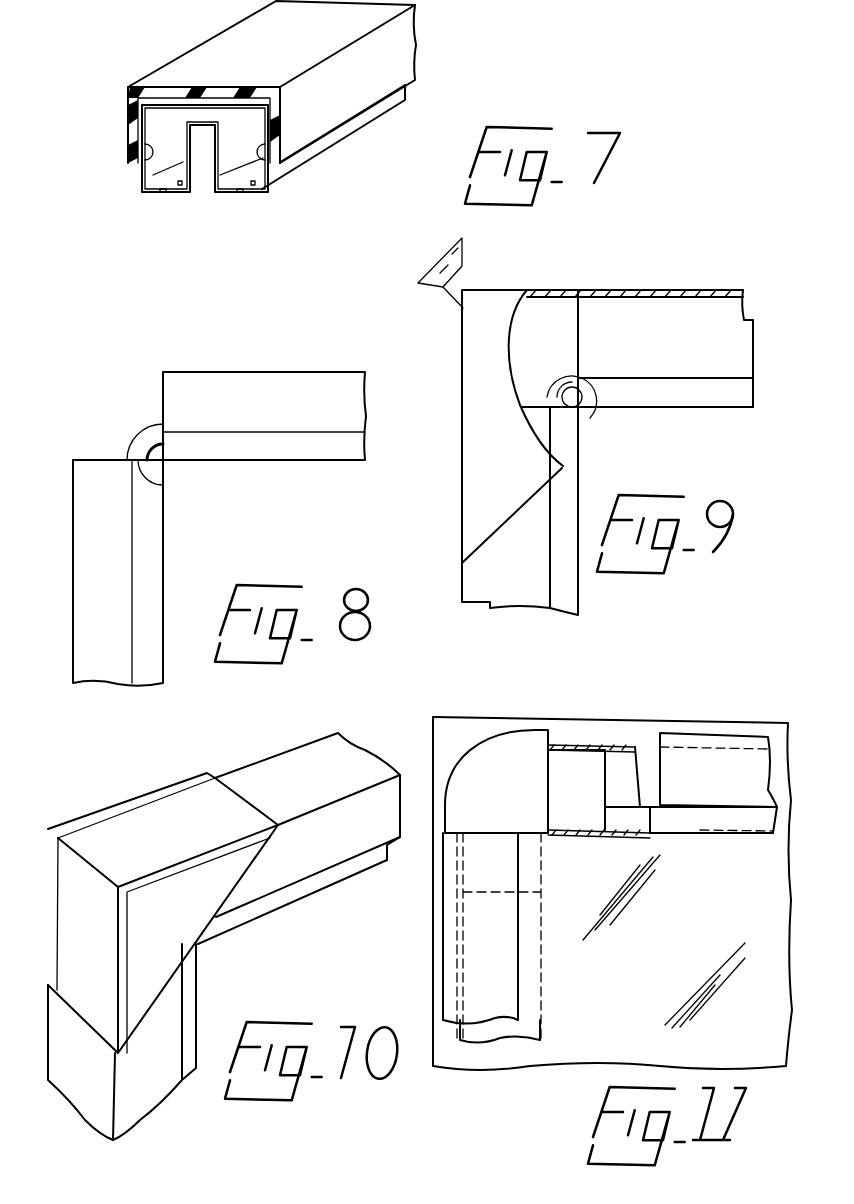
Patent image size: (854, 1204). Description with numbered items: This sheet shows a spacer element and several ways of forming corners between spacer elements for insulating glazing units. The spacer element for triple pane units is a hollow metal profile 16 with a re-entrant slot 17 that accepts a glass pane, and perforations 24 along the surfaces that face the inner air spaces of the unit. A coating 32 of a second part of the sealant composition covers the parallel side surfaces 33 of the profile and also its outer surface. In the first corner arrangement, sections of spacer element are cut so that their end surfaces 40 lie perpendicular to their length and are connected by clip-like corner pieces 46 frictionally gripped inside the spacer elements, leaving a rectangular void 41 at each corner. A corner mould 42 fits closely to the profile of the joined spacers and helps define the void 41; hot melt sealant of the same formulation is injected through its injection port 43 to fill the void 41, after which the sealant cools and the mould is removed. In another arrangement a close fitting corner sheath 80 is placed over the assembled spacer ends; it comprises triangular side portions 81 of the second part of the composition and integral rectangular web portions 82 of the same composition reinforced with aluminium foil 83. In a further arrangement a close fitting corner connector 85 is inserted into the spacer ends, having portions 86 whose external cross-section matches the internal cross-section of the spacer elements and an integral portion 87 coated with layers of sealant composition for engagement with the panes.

In FIG. 7, the hollow metal profile 16 is at (330, 145).
In FIG. 7, the re-entrant slot 17 is at (197, 212).
In FIG. 7, the perforations 24 is at (167, 197).
In FIG. 7, the coating 32 is at (397, 62).
In FIG. 7, the parallel side surfaces 33 is at (143, 175).
In FIG. 8, the end surfaces 40 is at (112, 412).
In FIG. 9, the end surfaces 40 is at (578, 332).
In FIG. 8, the void 41 is at (114, 378).
In FIG. 9, the corner mould 42 is at (518, 479).
In FIG. 7, the injection port 43 is at (203, 135).
In FIG. 9, the injection port 43 is at (447, 292).
In FIG. 8, the corner pieces 46 is at (170, 488).
In FIG. 9, the corner pieces 46 is at (590, 415).
In FIG. 10, the corner sheath 80 is at (252, 946).
In FIG. 10, the triangular side portions 81 is at (163, 955).
In FIG. 10, the rectangular web portions 82 is at (189, 780).
In FIG. 10, the aluminium foil 83 is at (122, 837).
In FIG. 11, the corner connector 85 is at (574, 698).
In FIG. 11, the portions 86 is at (588, 767).
In FIG. 11, the integral portion 87 is at (488, 768).